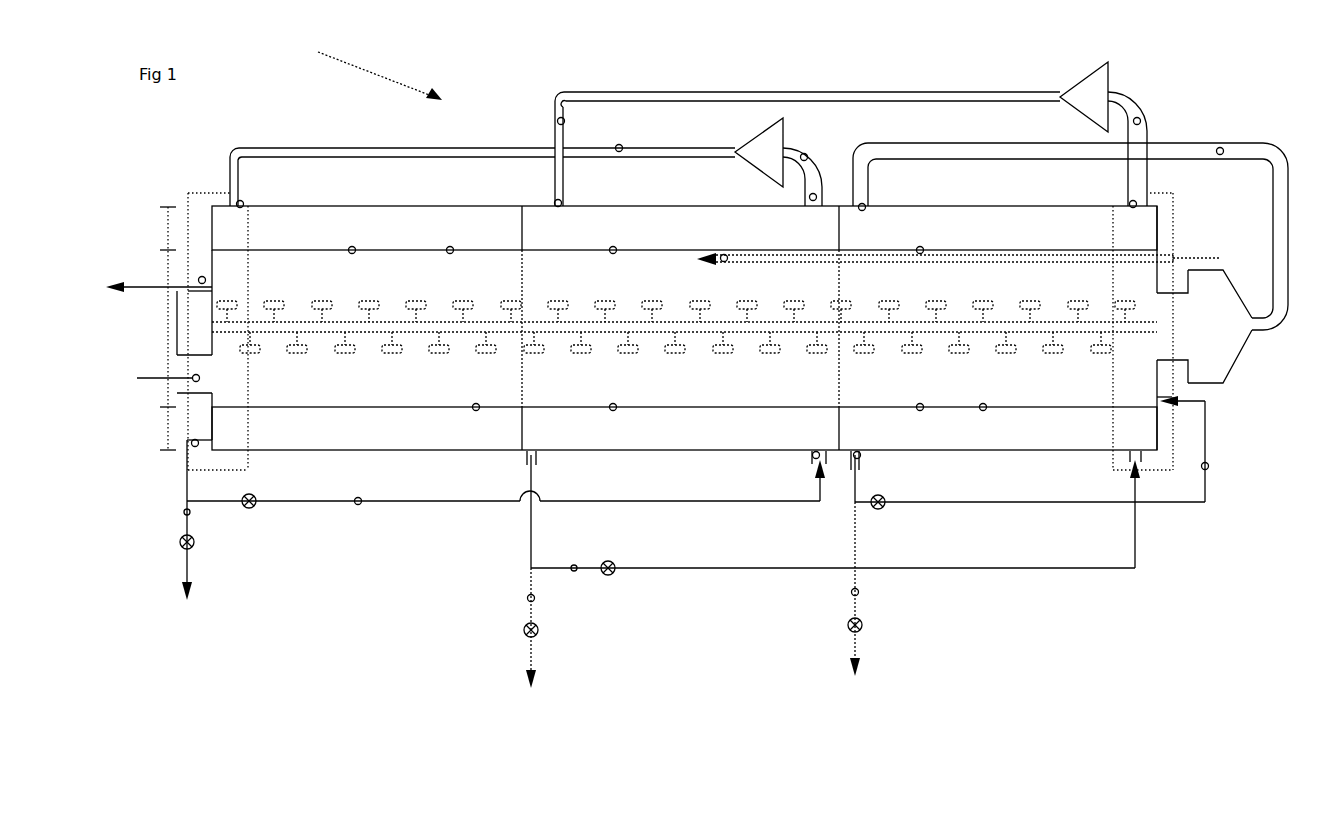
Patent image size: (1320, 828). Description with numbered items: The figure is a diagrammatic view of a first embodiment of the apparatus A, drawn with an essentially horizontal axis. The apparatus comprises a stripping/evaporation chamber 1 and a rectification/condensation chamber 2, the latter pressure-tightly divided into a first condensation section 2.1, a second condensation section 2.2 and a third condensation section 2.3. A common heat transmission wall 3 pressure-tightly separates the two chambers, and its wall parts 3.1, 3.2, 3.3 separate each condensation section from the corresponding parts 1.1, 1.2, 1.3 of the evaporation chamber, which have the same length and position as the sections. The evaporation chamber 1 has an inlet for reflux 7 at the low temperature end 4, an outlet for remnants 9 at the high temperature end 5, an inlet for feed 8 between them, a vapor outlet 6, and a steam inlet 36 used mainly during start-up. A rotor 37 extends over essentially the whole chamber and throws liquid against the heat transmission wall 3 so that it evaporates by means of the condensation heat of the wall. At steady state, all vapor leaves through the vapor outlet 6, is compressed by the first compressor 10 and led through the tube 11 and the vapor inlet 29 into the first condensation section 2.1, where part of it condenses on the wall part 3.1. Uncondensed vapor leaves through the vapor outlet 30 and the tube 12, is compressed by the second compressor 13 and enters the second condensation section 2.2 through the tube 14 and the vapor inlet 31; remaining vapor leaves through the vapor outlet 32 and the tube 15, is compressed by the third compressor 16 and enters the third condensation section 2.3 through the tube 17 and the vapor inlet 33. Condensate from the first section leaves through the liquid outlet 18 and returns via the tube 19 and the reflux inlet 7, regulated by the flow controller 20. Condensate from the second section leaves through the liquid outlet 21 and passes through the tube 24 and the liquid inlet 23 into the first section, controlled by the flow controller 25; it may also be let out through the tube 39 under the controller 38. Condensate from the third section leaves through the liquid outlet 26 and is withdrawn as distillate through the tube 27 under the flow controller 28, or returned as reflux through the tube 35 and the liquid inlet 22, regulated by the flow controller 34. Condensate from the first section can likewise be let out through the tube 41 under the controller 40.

The apparatus A is at (370, 65).
The stripping/evaporation chamber 1 is at (651, 345).
The first part of the evaporation chamber 1.1 is at (928, 328).
The second part of the evaporation chamber 1.2 is at (687, 269).
The third part of the evaporation chamber 1.3 is at (453, 328).
The rectification/condensation chamber 2 is at (649, 328).
The first condensation section 2.1 is at (1092, 328).
The second condensation section 2.2 is at (760, 328).
The third condensation section 2.3 is at (457, 328).
The heat transmission wall 3 is at (352, 254).
The first heat transmission wall part 3.1 is at (920, 246).
The second heat transmission wall part 3.2 is at (613, 254).
The third heat transmission wall part 3.3 is at (450, 254).
The low temperature end 4 is at (1143, 321).
The high temperature end 5 is at (218, 320).
The vapor outlet 6 is at (1172, 333).
The inlet for reflux 7 is at (1162, 406).
The inlet for feed 8 is at (724, 262).
The outlet for remnants 9 is at (200, 276).
The first compressor 10 is at (1220, 326).
The tube 11 is at (1220, 147).
The tube 12 is at (1141, 121).
The second compressor 13 is at (851, 134).
The tube 14 is at (557, 121).
The tube 15 is at (806, 153).
The third compressor 16 is at (530, 162).
The tube 17 is at (619, 144).
The liquid outlet 18 is at (861, 458).
The tube 19 is at (1209, 466).
The flow controller 20 is at (887, 514).
The liquid outlet 21 is at (527, 459).
The liquid inlet 22 is at (812, 458).
The liquid inlet 23 is at (1130, 460).
The tube 24 is at (574, 571).
The flow controller 25 is at (607, 584).
The liquid outlet 26 is at (190, 448).
The tube 27 is at (184, 512).
The flow controller 28 is at (199, 550).
The vapor inlet 29 is at (866, 203).
The vapor outlet 30 is at (1129, 201).
The vapor inlet 31 is at (554, 200).
The vapor outlet 32 is at (816, 193).
The vapor inlet 33 is at (243, 201).
The flow controller 34 is at (248, 491).
The tube 35 is at (358, 505).
The steam inlet 36 is at (154, 378).
The rotor 37 is at (383, 322).
The controller 38 is at (516, 630).
The tube 39 is at (527, 598).
The controller 40 is at (836, 625).
The tube 41 is at (859, 592).